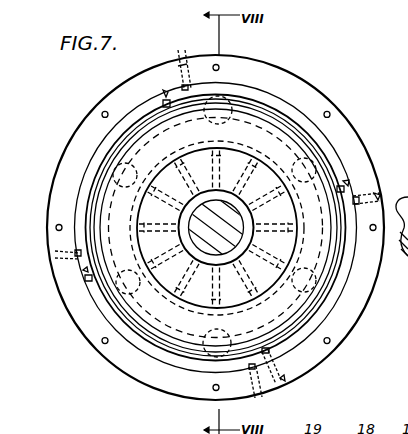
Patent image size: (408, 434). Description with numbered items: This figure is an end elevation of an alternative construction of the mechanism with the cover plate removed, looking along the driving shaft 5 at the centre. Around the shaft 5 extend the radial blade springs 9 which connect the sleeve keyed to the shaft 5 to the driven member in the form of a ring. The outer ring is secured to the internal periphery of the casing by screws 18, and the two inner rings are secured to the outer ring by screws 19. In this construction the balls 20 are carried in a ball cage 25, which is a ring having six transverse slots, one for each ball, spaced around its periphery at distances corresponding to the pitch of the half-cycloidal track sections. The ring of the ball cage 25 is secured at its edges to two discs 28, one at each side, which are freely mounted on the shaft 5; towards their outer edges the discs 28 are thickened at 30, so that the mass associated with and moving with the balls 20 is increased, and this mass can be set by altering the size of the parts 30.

The driving shaft 5 is at (207, 248).
The radial blade springs 9 is at (90, 209).
The screws 18 is at (180, 62).
The screws 19 is at (165, 92).
The balls 20 is at (321, 163).
The ball cage 25 is at (261, 123).
The discs 28 is at (176, 295).
The thickened parts 30 is at (147, 296).